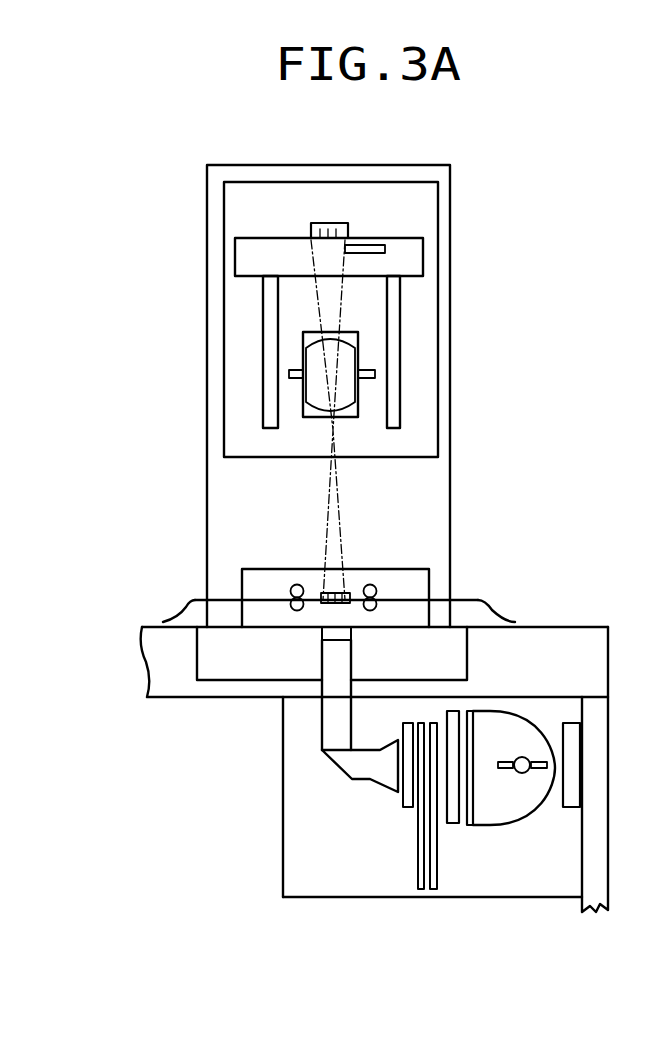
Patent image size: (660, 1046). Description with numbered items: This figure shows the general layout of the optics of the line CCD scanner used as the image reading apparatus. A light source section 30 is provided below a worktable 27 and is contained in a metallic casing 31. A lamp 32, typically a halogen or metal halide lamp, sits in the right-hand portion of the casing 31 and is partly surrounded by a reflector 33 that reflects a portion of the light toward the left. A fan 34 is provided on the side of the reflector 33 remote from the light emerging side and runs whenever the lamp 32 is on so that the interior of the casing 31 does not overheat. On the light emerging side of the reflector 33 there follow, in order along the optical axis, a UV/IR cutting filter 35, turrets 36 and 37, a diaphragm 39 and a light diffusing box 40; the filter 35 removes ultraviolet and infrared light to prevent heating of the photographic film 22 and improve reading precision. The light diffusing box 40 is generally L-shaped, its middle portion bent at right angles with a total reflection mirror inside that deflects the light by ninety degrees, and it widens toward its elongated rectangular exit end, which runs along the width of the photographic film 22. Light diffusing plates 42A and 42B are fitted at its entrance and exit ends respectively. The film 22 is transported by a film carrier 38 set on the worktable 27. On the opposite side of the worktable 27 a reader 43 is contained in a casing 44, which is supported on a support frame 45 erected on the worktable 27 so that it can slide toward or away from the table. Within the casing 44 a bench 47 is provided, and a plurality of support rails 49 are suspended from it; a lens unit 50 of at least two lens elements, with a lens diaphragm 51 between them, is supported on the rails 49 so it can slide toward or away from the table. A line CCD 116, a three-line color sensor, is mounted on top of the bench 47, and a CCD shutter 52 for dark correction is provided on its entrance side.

The line CCD 116 is at (335, 222).
The bench 47 is at (234, 252).
The CCD shutter 52 is at (386, 249).
The support rails 49 is at (262, 303).
The casing 44 is at (440, 345).
The support frame 45 is at (451, 411).
The reader 43 is at (238, 428).
The lens diaphragm 51 is at (288, 374).
The lens unit 50 is at (360, 410).
The film carrier 38 is at (433, 575).
The photographic film 22 is at (180, 612).
The worktable 27 is at (578, 627).
The light diffusing plate 42B is at (321, 635).
The light diffusing box 40 is at (304, 735).
The light diffusing plate 42A is at (398, 794).
The light source section 30 is at (441, 816).
The casing 31 is at (293, 899).
The diaphragm 39 is at (410, 808).
The turret 37 is at (421, 890).
The turret 36 is at (433, 890).
The UV/IR cutting filter 35 is at (453, 824).
The reflector 33 is at (500, 826).
The lamp 32 is at (523, 773).
The fan 34 is at (573, 808).